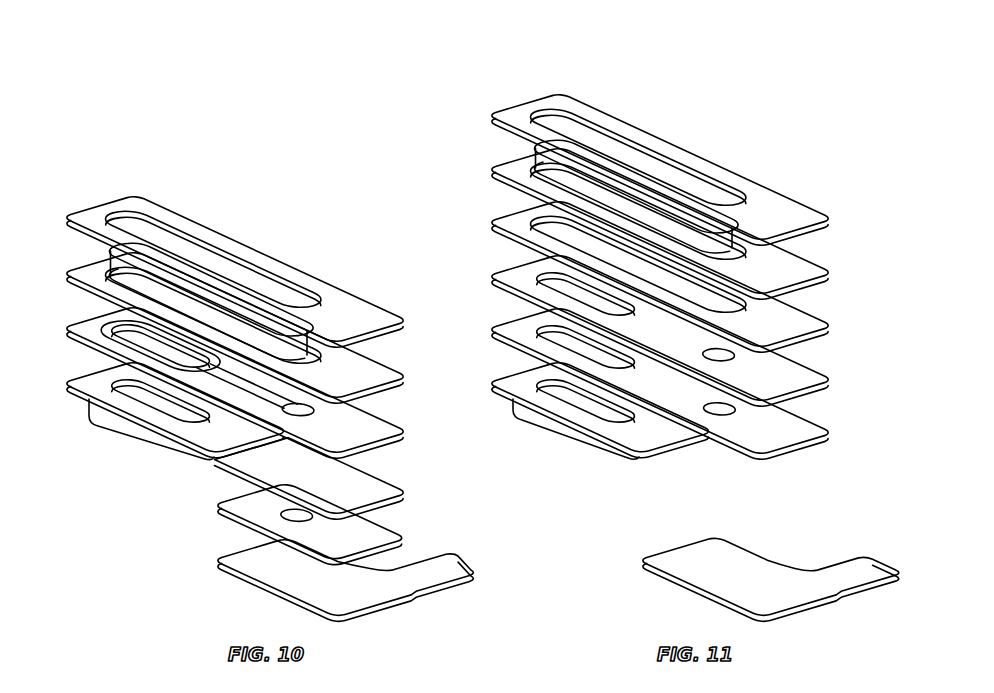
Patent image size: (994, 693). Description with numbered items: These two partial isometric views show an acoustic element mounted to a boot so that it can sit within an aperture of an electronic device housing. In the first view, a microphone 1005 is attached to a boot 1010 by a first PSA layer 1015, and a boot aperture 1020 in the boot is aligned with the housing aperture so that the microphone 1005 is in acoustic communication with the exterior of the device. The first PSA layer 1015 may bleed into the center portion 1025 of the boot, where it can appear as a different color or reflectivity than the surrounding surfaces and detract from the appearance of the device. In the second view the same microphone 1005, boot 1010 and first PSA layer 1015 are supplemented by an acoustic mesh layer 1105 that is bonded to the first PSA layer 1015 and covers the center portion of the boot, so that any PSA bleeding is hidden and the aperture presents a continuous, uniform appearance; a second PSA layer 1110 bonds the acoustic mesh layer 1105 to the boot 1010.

In FIG. 10, the microphone 1005 is at (100, 418).
In FIG. 11, the microphone 1005 is at (520, 415).
In FIG. 10, the boot 1010 is at (92, 273).
In FIG. 11, the boot 1010 is at (518, 168).
In FIG. 10, the first PSA layer 1015 is at (214, 381).
In FIG. 11, the first PSA layer 1015 is at (661, 382).
In FIG. 10, the boot aperture 1020 is at (222, 297).
In FIG. 11, the boot aperture 1020 is at (633, 190).
In FIG. 10, the center portion 1025 is at (92, 328).
In FIG. 11, the acoustic mesh layer 1105 is at (810, 373).
In FIG. 11, the second PSA layer 1110 is at (808, 320).